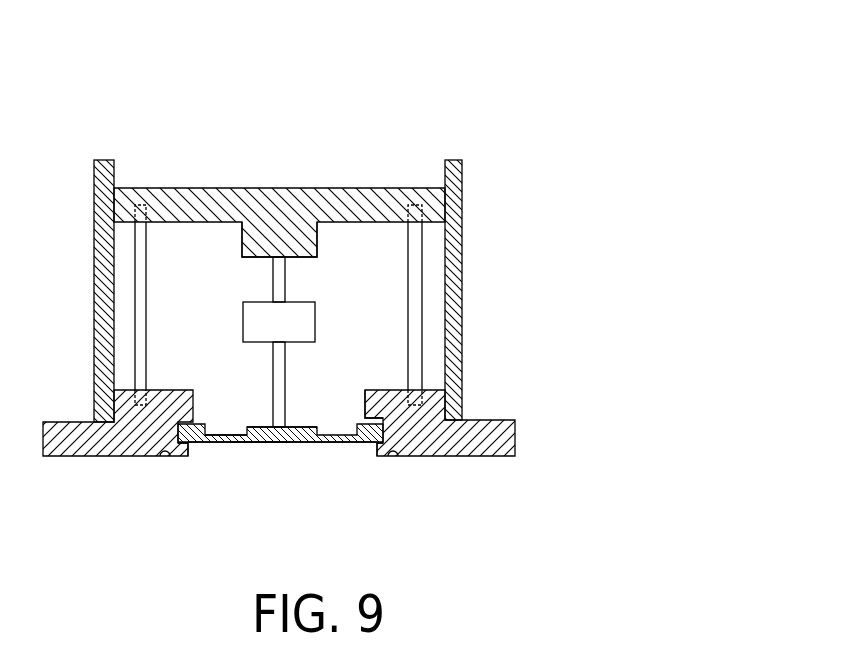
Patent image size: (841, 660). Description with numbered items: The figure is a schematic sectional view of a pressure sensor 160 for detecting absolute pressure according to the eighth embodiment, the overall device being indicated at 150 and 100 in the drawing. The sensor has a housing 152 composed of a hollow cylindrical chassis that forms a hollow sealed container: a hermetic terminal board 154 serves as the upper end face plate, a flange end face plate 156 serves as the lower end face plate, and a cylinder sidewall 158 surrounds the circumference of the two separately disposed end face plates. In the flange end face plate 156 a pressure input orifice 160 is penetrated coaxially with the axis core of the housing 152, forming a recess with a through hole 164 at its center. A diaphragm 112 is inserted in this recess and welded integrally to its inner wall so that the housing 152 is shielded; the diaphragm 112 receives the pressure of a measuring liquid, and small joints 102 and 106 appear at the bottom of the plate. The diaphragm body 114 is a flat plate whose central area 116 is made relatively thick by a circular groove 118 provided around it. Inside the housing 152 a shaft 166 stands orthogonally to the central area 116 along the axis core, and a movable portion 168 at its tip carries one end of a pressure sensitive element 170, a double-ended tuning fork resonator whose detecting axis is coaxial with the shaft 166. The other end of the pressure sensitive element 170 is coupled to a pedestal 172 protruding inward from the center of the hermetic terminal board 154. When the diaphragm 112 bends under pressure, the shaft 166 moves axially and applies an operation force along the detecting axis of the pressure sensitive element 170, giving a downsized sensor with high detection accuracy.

The sensor device 150 is at (465, 113).
The housing 152 is at (548, 193).
The hermetic terminal board 154 is at (447, 197).
The flange end face plate 156 is at (483, 428).
The cylinder sidewall 158 is at (463, 283).
The pressure input orifice 160 is at (386, 446).
The through hole 164 is at (365, 397).
The shaft 166 is at (273, 357).
The movable portion 168 is at (243, 318).
The pressure sensitive element 170 is at (273, 272).
The pedestal 172 is at (242, 228).
The sensor element 100 is at (185, 447).
The bump / connection portion 102 is at (178, 445).
The solder bump 106 is at (163, 454).
The diaphragm 112 is at (254, 443).
The diaphragm body 114 is at (287, 445).
The central area 116 is at (305, 426).
The circular groove 118 is at (224, 433).